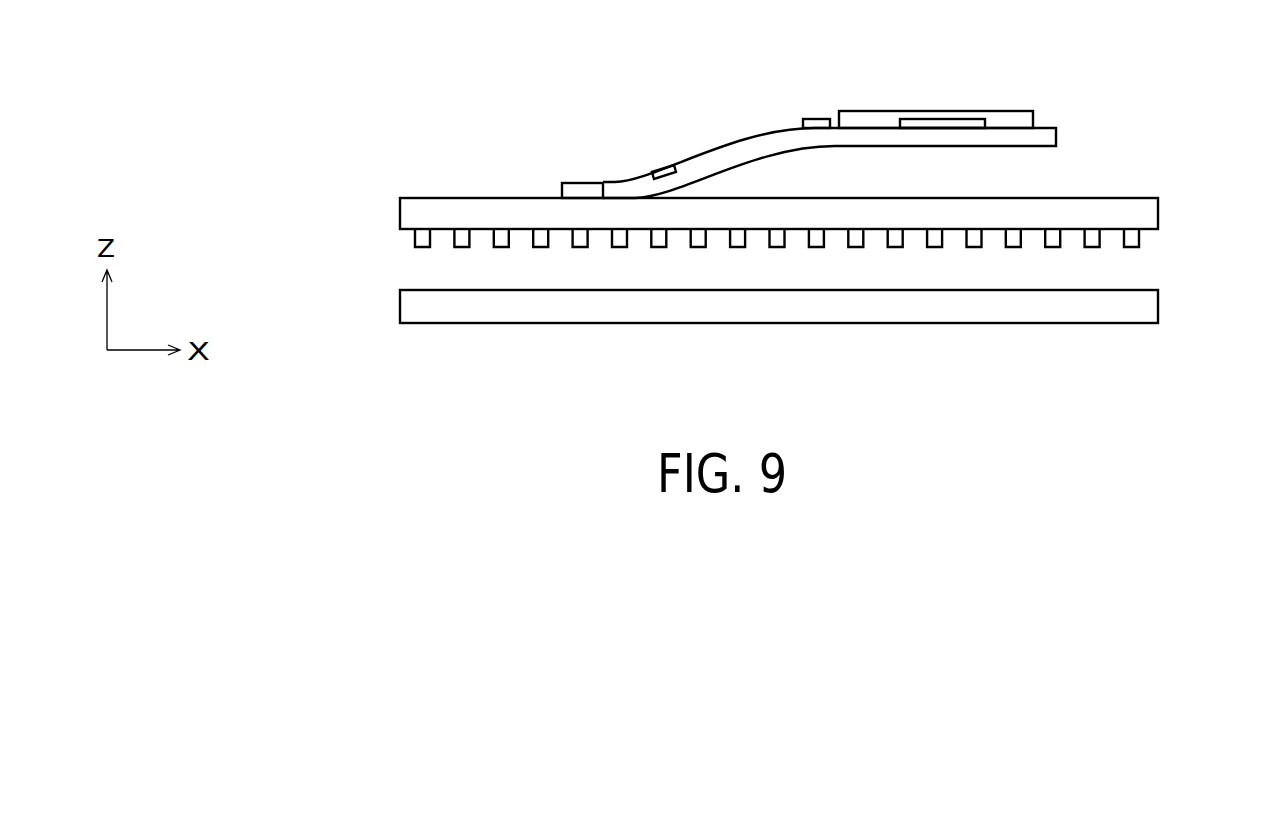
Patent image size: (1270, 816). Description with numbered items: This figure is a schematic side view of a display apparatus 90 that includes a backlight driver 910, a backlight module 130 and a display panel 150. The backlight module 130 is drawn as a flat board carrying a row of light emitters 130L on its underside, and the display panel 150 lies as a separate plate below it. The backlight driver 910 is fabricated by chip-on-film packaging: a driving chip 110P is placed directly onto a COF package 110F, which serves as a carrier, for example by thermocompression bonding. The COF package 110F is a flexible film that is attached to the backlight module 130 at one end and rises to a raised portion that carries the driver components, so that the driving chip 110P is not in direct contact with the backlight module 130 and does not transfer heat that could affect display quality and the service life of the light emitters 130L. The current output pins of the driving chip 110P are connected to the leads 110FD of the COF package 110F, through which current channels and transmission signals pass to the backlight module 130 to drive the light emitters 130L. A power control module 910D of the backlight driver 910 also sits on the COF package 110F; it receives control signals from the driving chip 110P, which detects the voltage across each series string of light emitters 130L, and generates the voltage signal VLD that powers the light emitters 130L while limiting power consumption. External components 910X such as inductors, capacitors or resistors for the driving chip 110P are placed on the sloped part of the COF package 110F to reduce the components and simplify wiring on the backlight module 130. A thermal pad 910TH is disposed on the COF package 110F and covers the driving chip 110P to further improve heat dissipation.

The display apparatus 90 is at (176, 120).
The COF package 110F is at (1055, 135).
The leads 110FD is at (585, 188).
The driving chip 110P is at (1022, 80).
The backlight driver 910 is at (961, 89).
The external components 910X is at (663, 168).
The power control module 910D is at (815, 118).
The thermal pad 910TH is at (913, 80).
The backlight module 130 is at (1152, 211).
The light emitters 130L is at (1130, 238).
The display panel 150 is at (1152, 307).